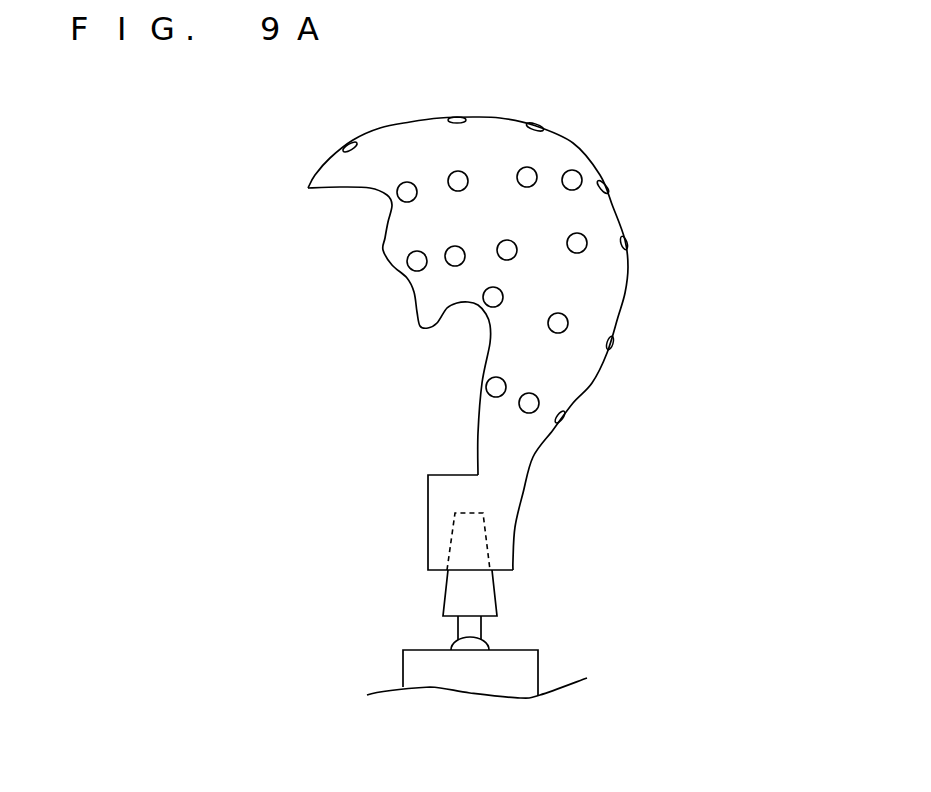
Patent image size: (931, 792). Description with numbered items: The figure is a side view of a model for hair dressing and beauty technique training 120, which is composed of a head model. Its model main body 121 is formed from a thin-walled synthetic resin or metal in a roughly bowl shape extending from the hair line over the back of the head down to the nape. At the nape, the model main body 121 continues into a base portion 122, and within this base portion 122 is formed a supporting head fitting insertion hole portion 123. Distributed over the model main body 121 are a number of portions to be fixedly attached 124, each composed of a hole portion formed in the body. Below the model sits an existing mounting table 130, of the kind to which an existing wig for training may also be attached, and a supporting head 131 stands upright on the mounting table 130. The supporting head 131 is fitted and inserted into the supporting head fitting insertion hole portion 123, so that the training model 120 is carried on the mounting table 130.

The model for hair dressing and beauty technique training 120 is at (542, 338).
The model main body 121 is at (592, 383).
The base portion 122 is at (477, 493).
The supporting head fitting insertion hole portion 123 is at (490, 552).
The portion to be fixedly attached 124 is at (580, 246).
The mounting table 130 is at (492, 634).
The supporting head 131 is at (497, 600).